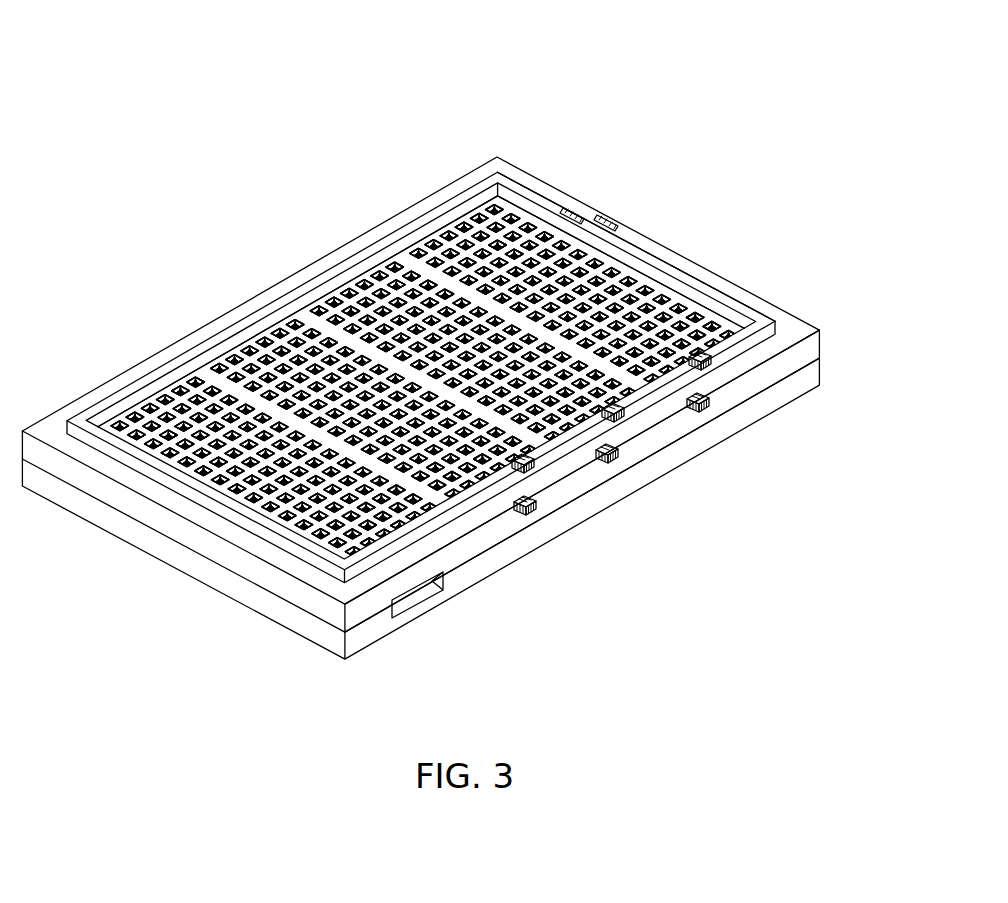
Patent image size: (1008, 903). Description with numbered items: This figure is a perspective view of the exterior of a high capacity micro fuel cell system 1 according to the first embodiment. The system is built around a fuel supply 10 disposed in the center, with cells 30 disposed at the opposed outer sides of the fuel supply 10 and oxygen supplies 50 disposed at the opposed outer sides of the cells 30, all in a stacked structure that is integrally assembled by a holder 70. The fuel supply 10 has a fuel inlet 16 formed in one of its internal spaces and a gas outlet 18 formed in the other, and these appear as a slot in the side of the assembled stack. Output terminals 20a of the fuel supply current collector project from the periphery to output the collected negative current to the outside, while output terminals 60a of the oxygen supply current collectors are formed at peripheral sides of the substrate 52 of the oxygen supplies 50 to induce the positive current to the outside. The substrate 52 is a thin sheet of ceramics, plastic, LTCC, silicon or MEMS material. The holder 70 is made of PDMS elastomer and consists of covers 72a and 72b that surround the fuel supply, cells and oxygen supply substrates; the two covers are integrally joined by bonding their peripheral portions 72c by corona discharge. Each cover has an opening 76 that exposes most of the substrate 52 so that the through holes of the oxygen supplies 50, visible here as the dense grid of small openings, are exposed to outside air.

The high capacity micro fuel cell system 1 is at (399, 100).
The fuel supply 10 is at (267, 337).
The cells 30 is at (424, 381).
The oxygen supplies 50 is at (424, 381).
The fuel inlet 16 is at (468, 616).
The gas outlet 18 is at (410, 596).
The output terminals 20a is at (618, 218).
The substrate 52 is at (703, 313).
The output terminals 60a is at (584, 210).
The holder 70 is at (685, 281).
The cover 72a is at (812, 350).
The cover 72b is at (812, 378).
The peripheral portions 72c is at (668, 452).
The opening 76 is at (580, 212).